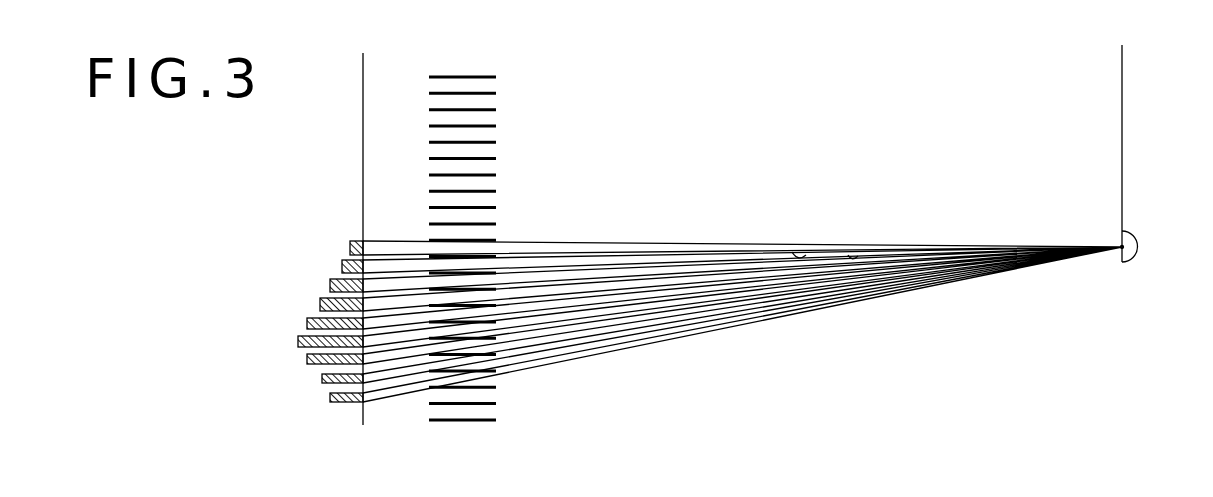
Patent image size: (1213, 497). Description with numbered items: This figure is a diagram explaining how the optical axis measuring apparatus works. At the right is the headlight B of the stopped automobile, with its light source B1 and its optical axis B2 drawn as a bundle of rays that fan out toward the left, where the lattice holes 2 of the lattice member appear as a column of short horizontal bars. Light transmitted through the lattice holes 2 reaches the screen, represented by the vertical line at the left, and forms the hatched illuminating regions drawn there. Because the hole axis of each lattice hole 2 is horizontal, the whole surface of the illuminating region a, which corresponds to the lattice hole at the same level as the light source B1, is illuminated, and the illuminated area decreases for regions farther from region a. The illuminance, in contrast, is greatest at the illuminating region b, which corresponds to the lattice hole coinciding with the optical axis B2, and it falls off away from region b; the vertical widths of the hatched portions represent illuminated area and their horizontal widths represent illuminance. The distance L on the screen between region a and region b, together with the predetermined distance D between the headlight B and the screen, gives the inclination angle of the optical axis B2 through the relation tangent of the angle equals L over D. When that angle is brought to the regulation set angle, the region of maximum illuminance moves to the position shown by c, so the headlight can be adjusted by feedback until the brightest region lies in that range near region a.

The illuminating region a is at (350, 249).
The illuminating region b is at (298, 338).
The illuminating region c is at (320, 304).
The lattice holes 2 is at (492, 240).
The distance on the screen L is at (242, 343).
The predetermined distance D is at (1120, 60).
The headlight B is at (1140, 229).
The light source B1 is at (1120, 232).
The optical axis B2 is at (828, 285).